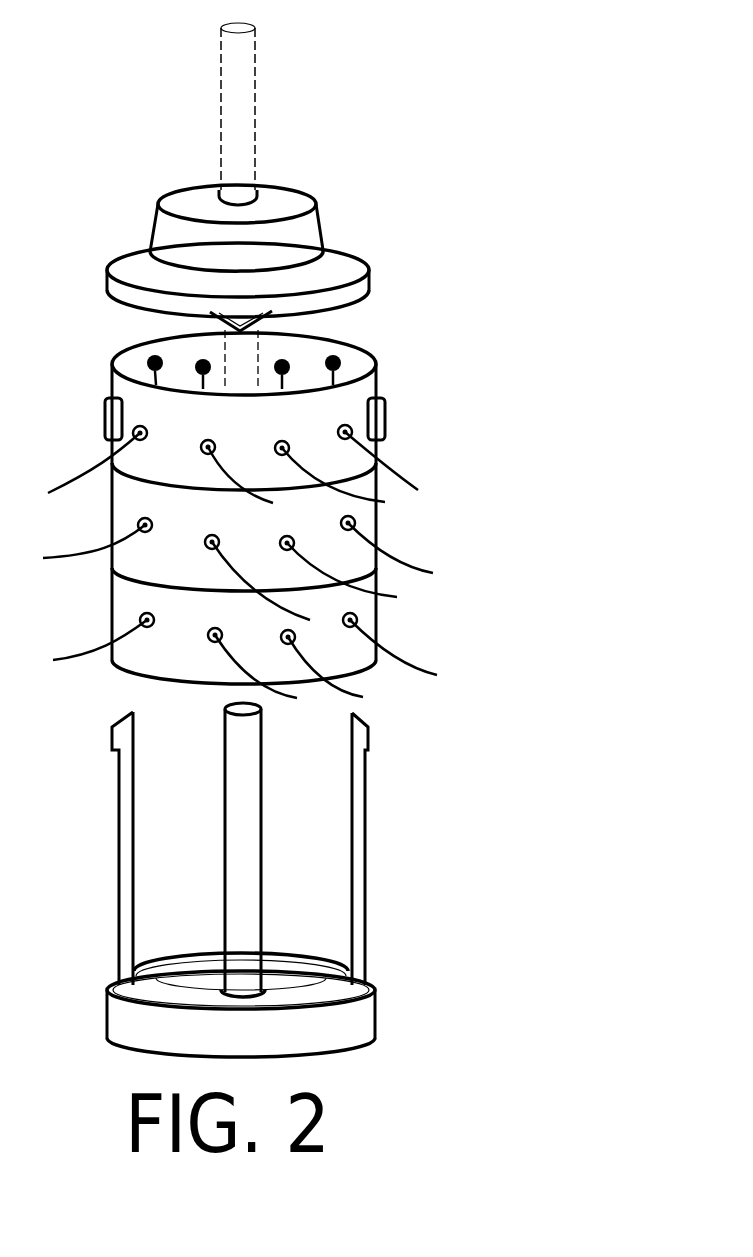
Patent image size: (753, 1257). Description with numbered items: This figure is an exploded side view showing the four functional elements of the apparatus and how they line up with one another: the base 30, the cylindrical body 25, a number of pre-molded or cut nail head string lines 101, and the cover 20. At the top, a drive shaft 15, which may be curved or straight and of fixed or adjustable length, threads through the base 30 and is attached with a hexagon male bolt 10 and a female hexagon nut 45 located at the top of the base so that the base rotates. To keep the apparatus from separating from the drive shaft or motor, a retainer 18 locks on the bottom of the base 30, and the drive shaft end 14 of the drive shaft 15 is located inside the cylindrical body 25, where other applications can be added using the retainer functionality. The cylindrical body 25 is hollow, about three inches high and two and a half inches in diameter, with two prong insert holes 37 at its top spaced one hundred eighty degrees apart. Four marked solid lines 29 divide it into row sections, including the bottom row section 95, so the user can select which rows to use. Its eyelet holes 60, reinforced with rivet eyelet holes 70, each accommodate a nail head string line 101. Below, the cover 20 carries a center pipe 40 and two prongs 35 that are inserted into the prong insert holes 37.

The hexagon male bolt 10 is at (217, 195).
The drive shaft 15 is at (245, 158).
The female hexagon nut 45 is at (272, 203).
The base 30 is at (247, 280).
The retainer 18 is at (210, 322).
The drive shaft end 14 is at (242, 345).
The cylindrical body 25 is at (245, 507).
The marked solid lines 29 is at (110, 373).
The prong insert holes 37 is at (105, 417).
The nail head string lines 101 is at (345, 360).
The eyelet holes 60 is at (355, 527).
The rivet eyelet holes 70 is at (147, 620).
The bottom row section 95 is at (357, 620).
The prongs 35 is at (366, 740).
The center pipe 40 is at (250, 895).
The cover 20 is at (257, 1023).